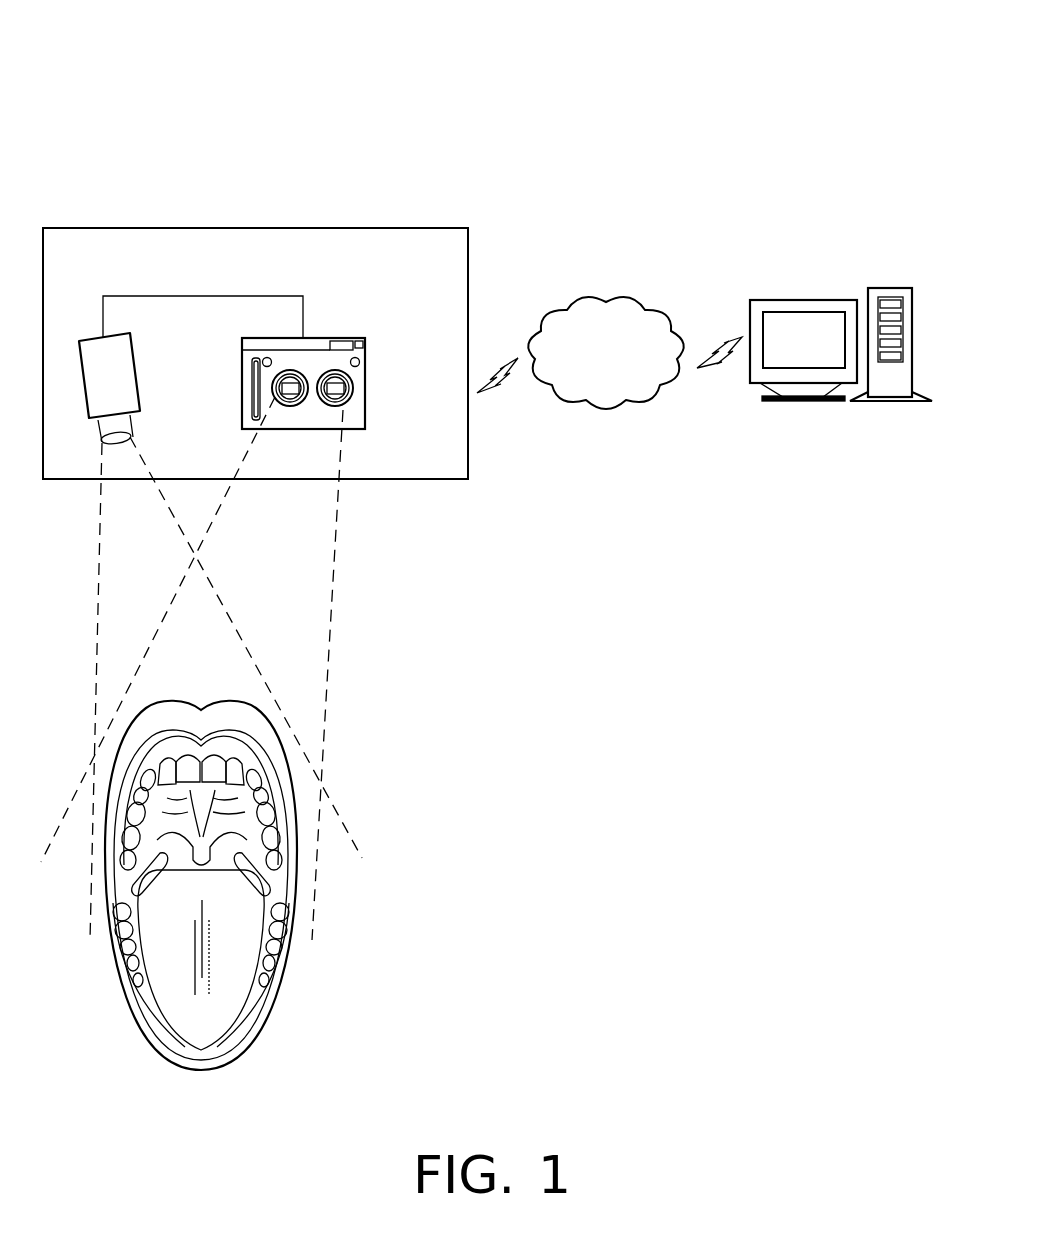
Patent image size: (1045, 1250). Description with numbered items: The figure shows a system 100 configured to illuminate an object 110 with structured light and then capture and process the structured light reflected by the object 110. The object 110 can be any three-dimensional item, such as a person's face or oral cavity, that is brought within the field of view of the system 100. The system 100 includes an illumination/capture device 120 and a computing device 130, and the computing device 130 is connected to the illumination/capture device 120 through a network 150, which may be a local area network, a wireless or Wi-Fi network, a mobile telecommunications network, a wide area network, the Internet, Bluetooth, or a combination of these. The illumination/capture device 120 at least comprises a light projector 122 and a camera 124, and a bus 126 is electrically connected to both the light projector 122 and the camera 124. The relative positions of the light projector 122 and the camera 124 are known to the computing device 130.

The system 100 is at (567, 148).
The object 110 is at (200, 708).
The illumination/capture device 120 is at (43, 228).
The light projector 122 is at (140, 372).
The camera 124 is at (365, 388).
The bus 126 is at (203, 296).
The computing device 130 is at (785, 300).
The network 150 is at (572, 293).